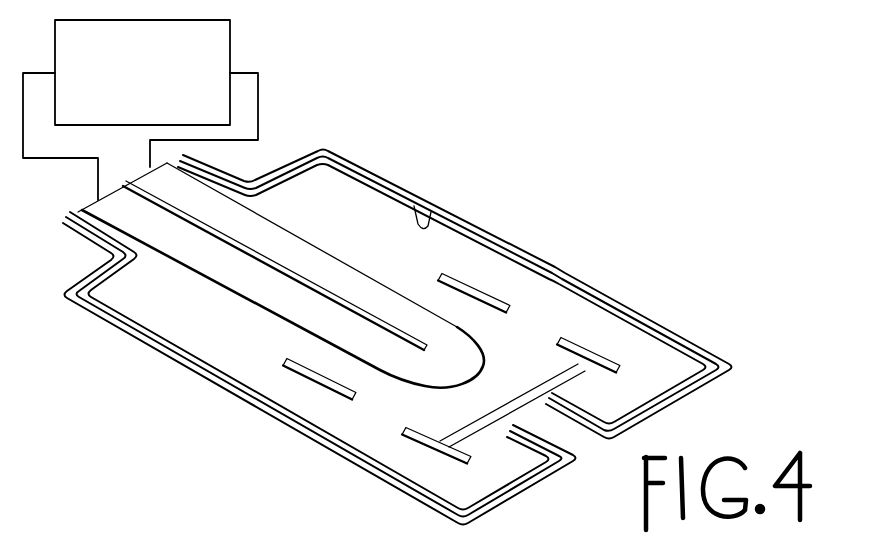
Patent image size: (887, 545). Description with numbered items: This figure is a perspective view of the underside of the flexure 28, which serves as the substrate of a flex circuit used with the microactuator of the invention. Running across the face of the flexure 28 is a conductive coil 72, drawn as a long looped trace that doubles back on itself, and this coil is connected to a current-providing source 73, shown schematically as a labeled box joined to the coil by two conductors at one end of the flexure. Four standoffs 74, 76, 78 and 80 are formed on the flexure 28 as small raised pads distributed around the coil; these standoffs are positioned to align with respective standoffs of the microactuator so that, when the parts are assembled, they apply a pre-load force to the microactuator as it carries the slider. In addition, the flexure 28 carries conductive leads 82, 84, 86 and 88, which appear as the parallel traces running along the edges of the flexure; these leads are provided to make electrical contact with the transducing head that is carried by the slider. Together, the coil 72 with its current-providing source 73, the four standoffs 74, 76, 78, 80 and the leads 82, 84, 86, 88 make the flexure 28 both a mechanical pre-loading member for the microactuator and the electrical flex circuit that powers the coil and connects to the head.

The flexure 28 is at (424, 337).
The conductive coil 72 is at (303, 257).
The current-providing source 73 is at (233, 35).
The standoff 74 is at (323, 392).
The standoff 76 is at (427, 445).
The standoff 78 is at (478, 287).
The standoff 80 is at (612, 360).
The conductive lead 82 is at (147, 355).
The conductive lead 84 is at (212, 380).
The conductive lead 86 is at (390, 183).
The conductive lead 88 is at (427, 223).